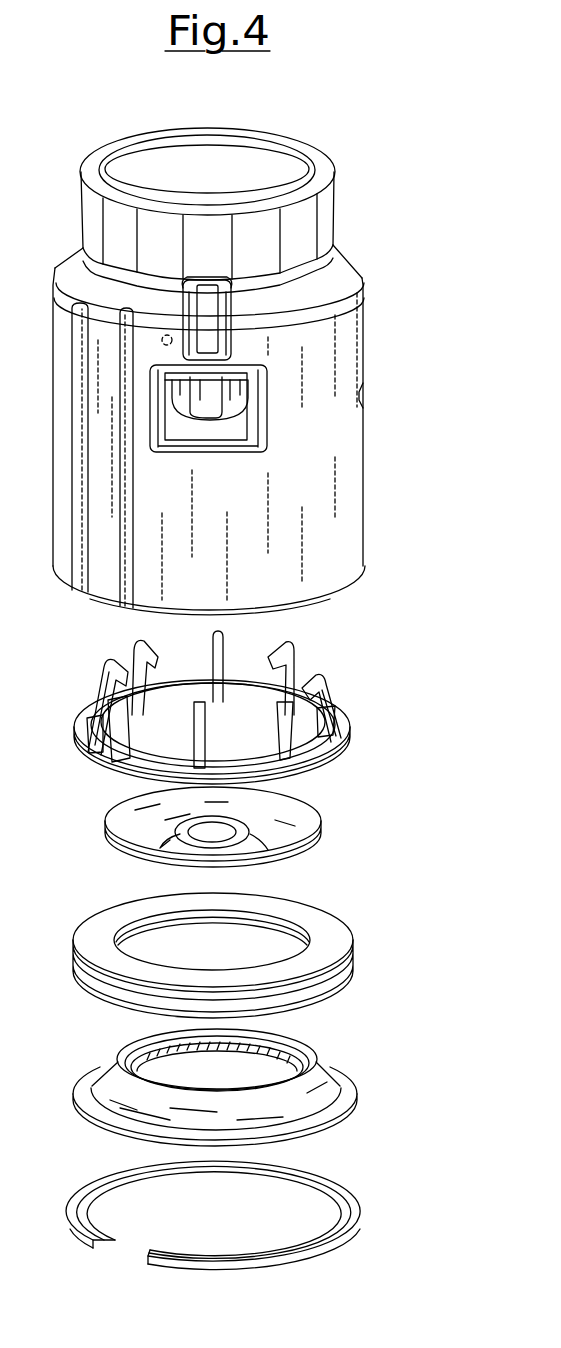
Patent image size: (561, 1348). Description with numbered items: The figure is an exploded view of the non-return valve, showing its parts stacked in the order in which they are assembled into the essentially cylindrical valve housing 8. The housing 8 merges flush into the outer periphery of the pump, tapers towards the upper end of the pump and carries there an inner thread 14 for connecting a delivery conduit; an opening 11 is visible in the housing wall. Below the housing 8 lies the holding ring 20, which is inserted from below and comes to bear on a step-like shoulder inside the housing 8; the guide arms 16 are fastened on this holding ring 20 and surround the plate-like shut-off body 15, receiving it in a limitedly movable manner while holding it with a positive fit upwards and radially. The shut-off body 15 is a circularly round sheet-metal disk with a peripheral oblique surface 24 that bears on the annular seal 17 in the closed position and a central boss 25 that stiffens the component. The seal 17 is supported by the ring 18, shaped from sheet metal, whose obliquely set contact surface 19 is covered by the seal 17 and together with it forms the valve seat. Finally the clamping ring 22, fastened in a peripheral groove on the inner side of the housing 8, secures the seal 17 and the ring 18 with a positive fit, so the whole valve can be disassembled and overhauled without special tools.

The valve housing 8 is at (253, 441).
The window / latch opening 11 is at (238, 430).
The inner thread 14 is at (290, 178).
The shut-off body 15 is at (284, 822).
The guide arms 16 is at (286, 650).
The annular seal 17 is at (358, 967).
The ring 18 is at (267, 1086).
The contact surface 19 is at (303, 1050).
The holding ring 20 is at (272, 683).
The clamping ring 22 is at (352, 1206).
The oblique surface 24 is at (287, 866).
The central boss 25 is at (228, 826).